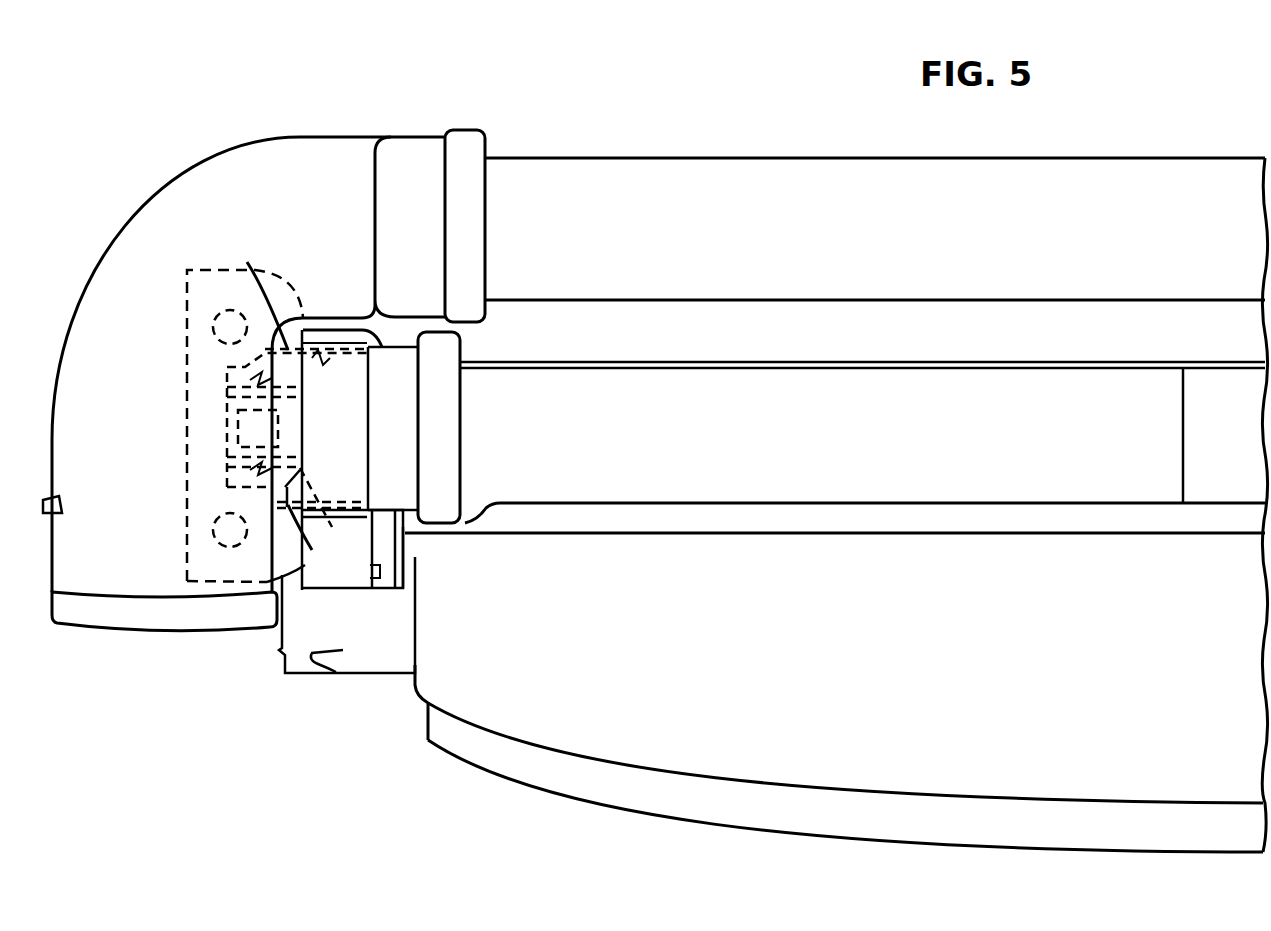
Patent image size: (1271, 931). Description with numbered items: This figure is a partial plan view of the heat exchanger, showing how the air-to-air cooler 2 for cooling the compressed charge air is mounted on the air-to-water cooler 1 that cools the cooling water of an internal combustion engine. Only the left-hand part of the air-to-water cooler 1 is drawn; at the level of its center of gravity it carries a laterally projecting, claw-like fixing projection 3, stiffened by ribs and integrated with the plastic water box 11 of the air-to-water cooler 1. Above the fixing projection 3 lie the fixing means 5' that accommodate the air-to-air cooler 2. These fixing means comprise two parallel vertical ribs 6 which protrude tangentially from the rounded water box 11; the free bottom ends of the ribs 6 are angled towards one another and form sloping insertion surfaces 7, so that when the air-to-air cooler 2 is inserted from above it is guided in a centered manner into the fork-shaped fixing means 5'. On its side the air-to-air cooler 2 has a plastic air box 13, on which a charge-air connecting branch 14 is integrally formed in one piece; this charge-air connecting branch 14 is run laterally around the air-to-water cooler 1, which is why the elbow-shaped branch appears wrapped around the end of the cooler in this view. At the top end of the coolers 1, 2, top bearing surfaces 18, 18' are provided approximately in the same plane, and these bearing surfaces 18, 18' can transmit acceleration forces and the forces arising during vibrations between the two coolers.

The air-to-water cooler 1 is at (812, 360).
The air-to-air cooler 2 is at (742, 188).
The fixing projections 3 is at (185, 298).
The fixing means 5' is at (241, 428).
The vertical ribs 6 is at (315, 360).
The sloping insertion surfaces 7 is at (280, 407).
The water box 11 is at (398, 365).
The air box 13 is at (407, 170).
The charge-air connecting branches 14 is at (92, 552).
The top bearing surface 18 is at (337, 290).
The top bearing surface 18' is at (342, 338).